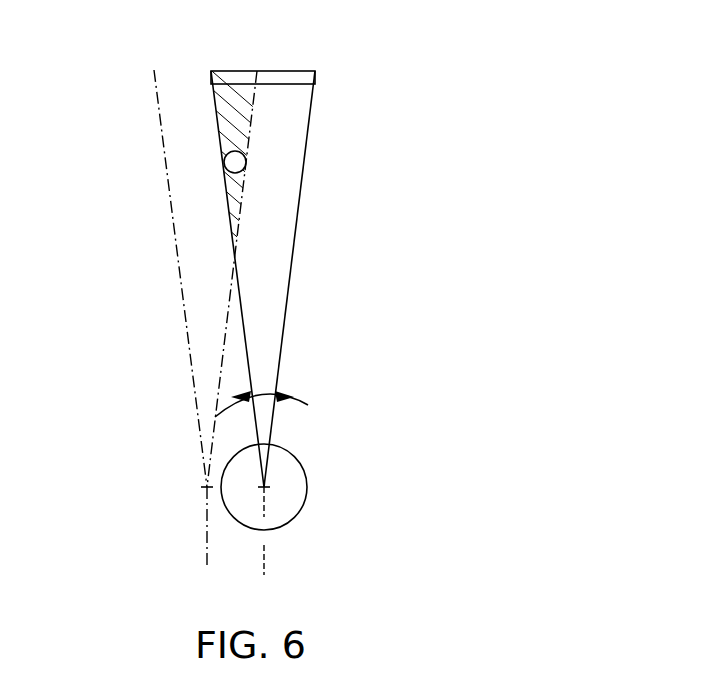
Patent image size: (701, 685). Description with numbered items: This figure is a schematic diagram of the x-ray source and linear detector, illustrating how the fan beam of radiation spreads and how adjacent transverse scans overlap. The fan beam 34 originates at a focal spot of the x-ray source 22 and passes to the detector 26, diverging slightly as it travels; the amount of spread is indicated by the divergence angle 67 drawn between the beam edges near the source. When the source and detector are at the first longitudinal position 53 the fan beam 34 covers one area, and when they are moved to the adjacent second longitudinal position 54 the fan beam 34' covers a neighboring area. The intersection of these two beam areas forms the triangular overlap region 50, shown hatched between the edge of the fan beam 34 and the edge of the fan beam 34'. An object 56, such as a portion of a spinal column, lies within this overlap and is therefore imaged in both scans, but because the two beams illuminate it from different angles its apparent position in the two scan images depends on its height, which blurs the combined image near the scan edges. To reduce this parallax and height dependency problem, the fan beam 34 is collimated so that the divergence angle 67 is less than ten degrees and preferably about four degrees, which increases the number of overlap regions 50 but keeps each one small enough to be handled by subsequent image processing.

The x-ray source 22 is at (307, 487).
The detector 26 is at (289, 70).
The fan beam 34 is at (285, 279).
The fan beam 34' is at (158, 278).
The overlap region 50 is at (212, 100).
The first longitudinal position 53 is at (268, 555).
The second longitudinal position 54 is at (205, 548).
The object 56 is at (252, 161).
The divergence angle 67 is at (262, 394).